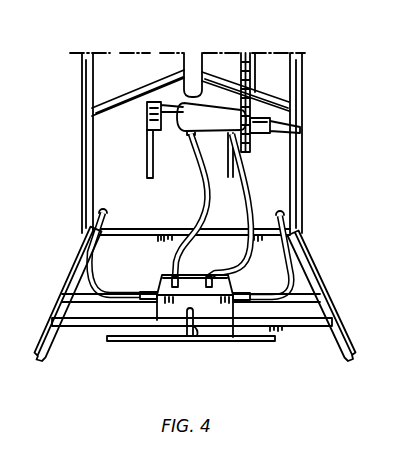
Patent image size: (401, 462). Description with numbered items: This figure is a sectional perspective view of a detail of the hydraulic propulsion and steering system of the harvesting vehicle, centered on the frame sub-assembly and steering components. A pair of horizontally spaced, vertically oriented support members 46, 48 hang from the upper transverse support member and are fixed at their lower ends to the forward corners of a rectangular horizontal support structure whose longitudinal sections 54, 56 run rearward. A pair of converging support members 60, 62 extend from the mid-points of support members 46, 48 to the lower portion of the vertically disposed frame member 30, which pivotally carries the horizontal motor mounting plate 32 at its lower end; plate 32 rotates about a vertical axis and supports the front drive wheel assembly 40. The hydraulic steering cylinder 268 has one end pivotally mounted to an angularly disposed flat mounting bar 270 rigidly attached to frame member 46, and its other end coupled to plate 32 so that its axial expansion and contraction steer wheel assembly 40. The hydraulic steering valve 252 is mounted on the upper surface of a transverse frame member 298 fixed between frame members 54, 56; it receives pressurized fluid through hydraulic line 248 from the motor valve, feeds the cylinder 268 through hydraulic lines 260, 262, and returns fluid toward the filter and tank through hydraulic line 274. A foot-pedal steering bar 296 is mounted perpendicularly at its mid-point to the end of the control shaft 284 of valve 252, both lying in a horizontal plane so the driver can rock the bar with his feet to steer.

The vertically disposed frame member 30 is at (190, 57).
The hydraulic steering cylinder 268 is at (212, 122).
The converging support member 62 is at (137, 88).
The converging support member 60 is at (280, 94).
The vertically oriented support member 46 is at (303, 81).
The vertically oriented support member 48 is at (82, 142).
The horizontal motor mounting plate 32 is at (147, 123).
The angularly disposed flat mounting bar 270 is at (282, 132).
The front drive wheel assembly 40 is at (171, 192).
The hydraulic line 262 is at (257, 208).
The hydraulic line 274 is at (285, 216).
The hydraulic line 260 is at (172, 265).
The hydraulic line 248 is at (93, 233).
The longitudinal section 54 is at (67, 280).
The longitudinal section 56 is at (319, 282).
The transverse frame member 298 is at (325, 313).
The hydraulic steering valve 252 is at (231, 325).
The control shaft 284 is at (192, 336).
The foot-pedal steering bar 296 is at (160, 341).